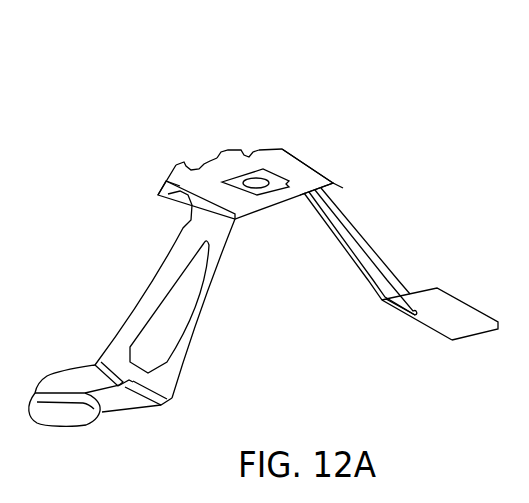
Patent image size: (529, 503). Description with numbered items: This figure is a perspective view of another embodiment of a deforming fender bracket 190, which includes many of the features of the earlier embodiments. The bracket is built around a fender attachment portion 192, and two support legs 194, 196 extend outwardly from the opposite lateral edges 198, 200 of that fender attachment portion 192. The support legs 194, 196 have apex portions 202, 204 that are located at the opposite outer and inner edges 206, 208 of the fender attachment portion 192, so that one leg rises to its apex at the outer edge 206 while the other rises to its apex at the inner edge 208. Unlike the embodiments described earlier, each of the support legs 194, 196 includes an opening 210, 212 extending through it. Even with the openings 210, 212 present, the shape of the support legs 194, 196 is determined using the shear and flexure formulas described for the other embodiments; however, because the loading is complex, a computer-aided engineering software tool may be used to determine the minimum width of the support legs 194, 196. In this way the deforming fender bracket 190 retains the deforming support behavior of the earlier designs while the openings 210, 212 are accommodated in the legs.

The deforming fender bracket 190 is at (288, 91).
The fender attachment portion 192 is at (322, 162).
The support leg 194 is at (132, 280).
The support leg 196 is at (416, 235).
The lateral edge 198 is at (158, 200).
The lateral edge 200 is at (283, 149).
The apex portion 202 is at (222, 274).
The apex portion 204 is at (360, 195).
The outer edge 206 is at (204, 162).
The inner edge 208 is at (266, 200).
The opening 210 is at (165, 352).
The opening 212 is at (368, 292).